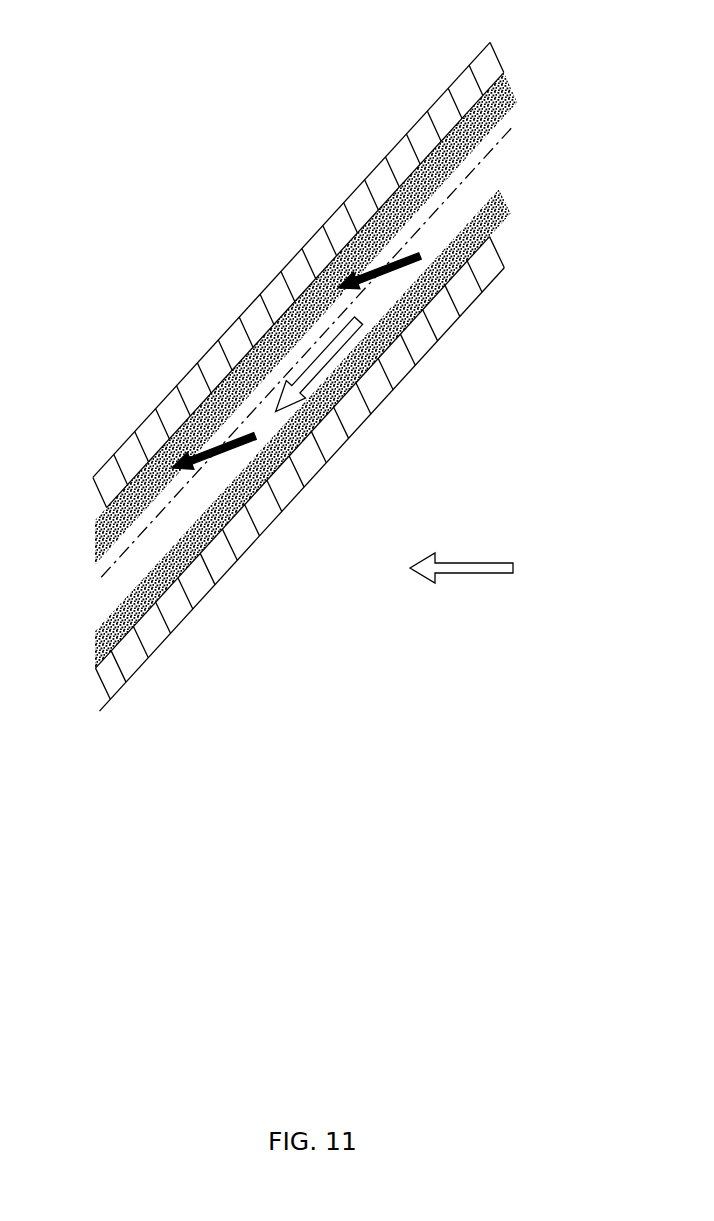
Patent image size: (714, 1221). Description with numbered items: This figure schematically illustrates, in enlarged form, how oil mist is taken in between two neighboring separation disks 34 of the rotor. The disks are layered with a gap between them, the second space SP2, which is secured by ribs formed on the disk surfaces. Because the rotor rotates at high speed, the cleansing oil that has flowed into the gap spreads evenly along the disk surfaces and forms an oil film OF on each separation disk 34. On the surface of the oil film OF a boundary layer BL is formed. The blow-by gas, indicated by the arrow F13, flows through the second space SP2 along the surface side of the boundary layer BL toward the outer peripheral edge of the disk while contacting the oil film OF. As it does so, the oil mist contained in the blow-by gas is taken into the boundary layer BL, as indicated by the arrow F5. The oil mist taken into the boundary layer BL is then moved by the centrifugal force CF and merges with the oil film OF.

The separation disk 34 is at (298, 376).
The oil film OF is at (228, 363).
The blow-by gas flow F13 is at (303, 326).
The boundary layer BL is at (165, 504).
The second space SP2 is at (447, 223).
The oil mist intake flow F5 is at (405, 283).
The centrifugal force CF is at (475, 576).